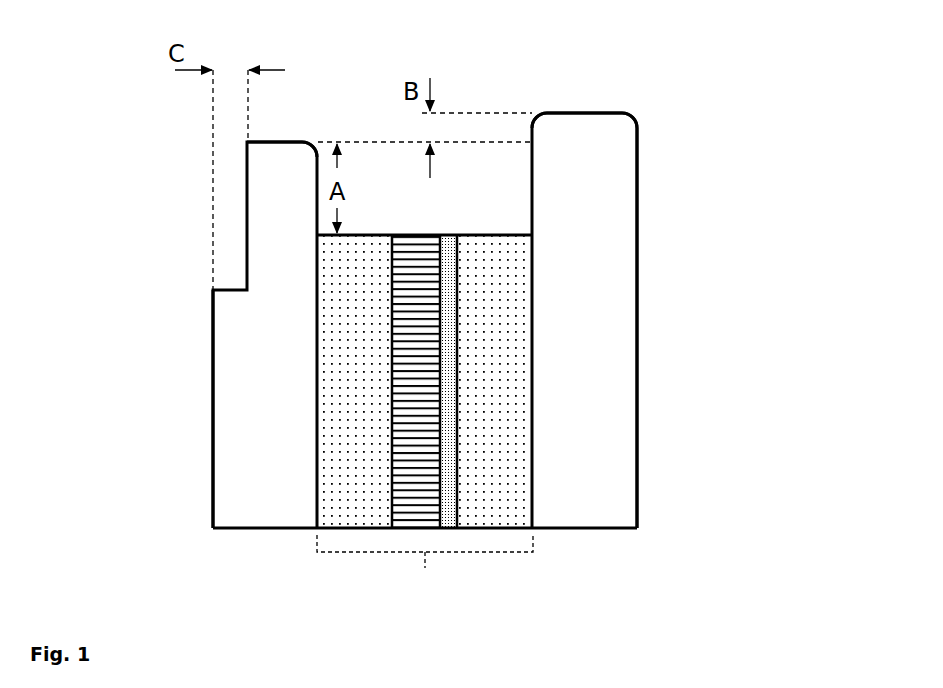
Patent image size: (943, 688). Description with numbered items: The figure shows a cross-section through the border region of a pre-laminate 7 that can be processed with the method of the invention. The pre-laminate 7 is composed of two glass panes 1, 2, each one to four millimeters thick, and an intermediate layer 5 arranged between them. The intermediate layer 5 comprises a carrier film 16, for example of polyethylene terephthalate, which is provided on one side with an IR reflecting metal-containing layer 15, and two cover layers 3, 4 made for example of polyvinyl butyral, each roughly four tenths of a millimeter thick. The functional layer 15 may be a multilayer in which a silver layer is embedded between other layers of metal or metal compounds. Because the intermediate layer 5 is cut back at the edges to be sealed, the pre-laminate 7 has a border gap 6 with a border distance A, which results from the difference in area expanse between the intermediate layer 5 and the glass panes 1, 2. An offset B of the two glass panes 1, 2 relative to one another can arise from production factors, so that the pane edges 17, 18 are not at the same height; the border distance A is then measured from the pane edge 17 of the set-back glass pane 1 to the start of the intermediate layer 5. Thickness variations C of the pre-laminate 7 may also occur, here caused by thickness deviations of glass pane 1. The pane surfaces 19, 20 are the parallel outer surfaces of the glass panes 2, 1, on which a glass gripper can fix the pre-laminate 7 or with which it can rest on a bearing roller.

The glass pane 1 is at (247, 443).
The glass pane 2 is at (607, 438).
The cover layer 3 is at (337, 505).
The cover layer 4 is at (512, 506).
The intermediate layer 5 is at (425, 569).
The border gap 6 is at (462, 157).
The pre-laminate 7 is at (695, 142).
The IR reflecting metal-containing layer 15 is at (447, 320).
The carrier film 16 is at (418, 290).
The pane edge 17 is at (285, 140).
The pane edge 18 is at (601, 111).
The pane surface 19 is at (640, 222).
The pane surface 20 is at (212, 336).